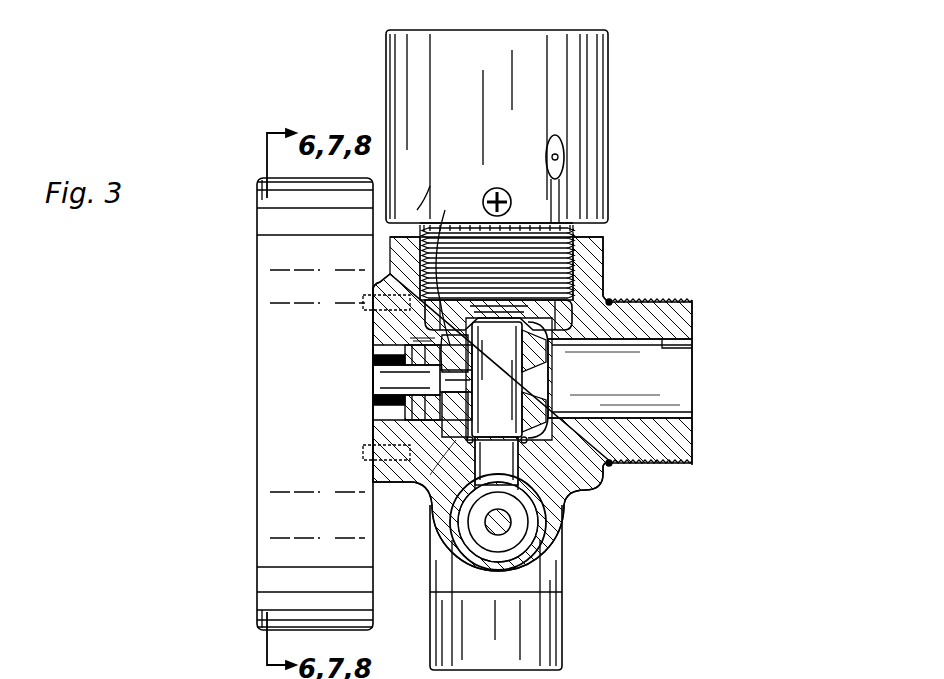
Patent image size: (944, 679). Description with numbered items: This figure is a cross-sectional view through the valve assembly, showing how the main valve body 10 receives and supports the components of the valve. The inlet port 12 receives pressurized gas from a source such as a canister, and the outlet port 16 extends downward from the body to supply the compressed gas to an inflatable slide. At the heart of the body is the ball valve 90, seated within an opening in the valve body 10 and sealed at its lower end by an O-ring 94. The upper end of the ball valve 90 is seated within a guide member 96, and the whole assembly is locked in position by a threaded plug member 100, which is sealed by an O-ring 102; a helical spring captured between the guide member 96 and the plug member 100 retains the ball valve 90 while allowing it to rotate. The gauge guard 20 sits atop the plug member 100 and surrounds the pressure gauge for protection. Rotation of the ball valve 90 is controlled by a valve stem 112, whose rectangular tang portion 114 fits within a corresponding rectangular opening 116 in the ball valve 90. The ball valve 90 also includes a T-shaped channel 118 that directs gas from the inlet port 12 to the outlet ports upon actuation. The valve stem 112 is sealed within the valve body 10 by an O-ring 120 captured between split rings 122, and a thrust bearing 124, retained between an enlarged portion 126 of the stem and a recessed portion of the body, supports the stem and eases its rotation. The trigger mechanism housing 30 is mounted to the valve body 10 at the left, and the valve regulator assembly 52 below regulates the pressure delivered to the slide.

The main valve body 10 is at (422, 183).
The inlet port 12 is at (692, 346).
The outlet port 16 is at (556, 655).
The gauge guard 20 is at (595, 109).
The trigger mechanism housing 30 is at (268, 458).
The valve regulator assembly 52 is at (524, 520).
The ball valve 90 is at (560, 360).
The O-ring 94 is at (565, 505).
The guide member 96 is at (595, 322).
The threaded plug member 100 is at (577, 242).
The O-ring 102 is at (567, 268).
The valve stem 112 is at (375, 395).
The rectangular tang portion 114 is at (458, 442).
The rectangular opening 116 is at (497, 406).
The T-shaped channel 118 is at (513, 396).
The O-ring 120 is at (390, 343).
The split rings 122 is at (395, 367).
The thrust bearing 124 is at (413, 337).
The enlarged portion 126 is at (459, 264).